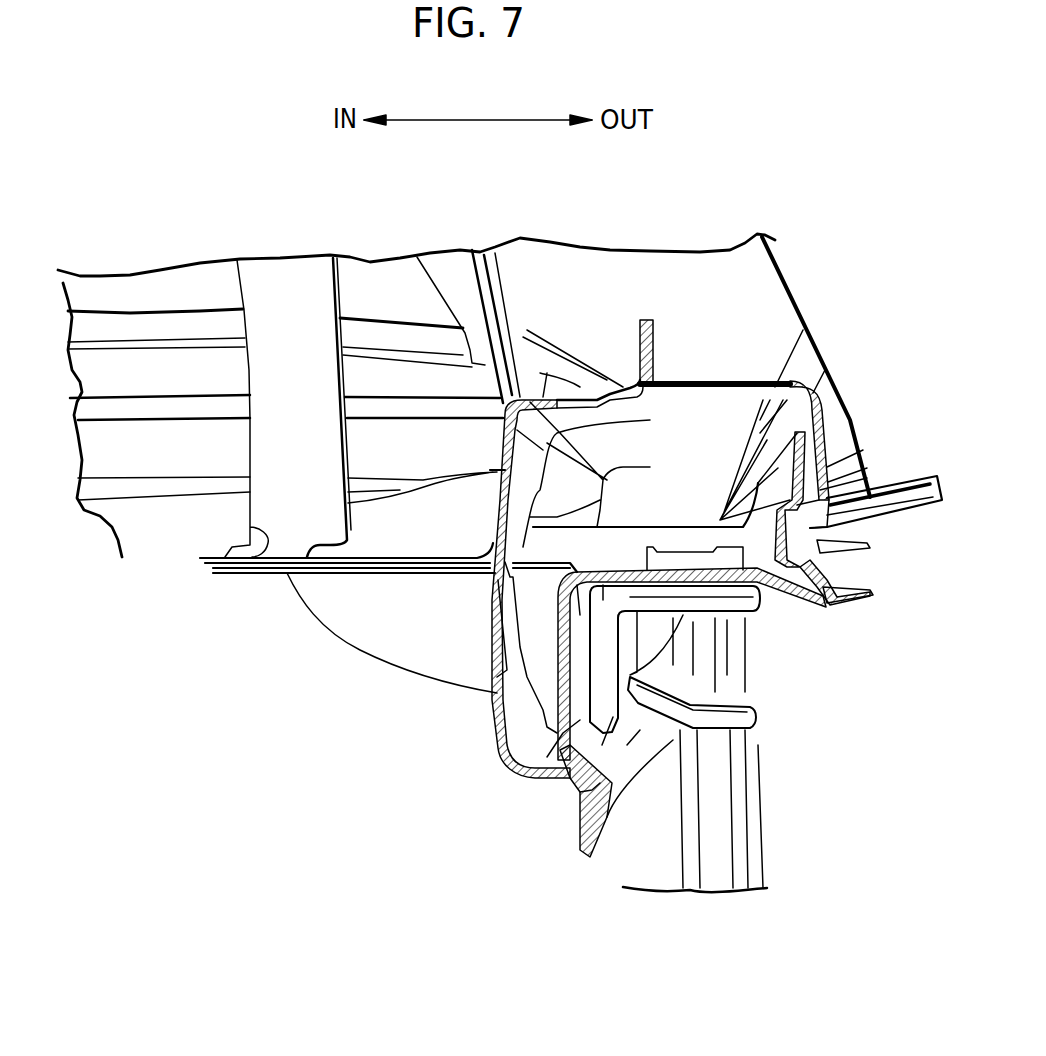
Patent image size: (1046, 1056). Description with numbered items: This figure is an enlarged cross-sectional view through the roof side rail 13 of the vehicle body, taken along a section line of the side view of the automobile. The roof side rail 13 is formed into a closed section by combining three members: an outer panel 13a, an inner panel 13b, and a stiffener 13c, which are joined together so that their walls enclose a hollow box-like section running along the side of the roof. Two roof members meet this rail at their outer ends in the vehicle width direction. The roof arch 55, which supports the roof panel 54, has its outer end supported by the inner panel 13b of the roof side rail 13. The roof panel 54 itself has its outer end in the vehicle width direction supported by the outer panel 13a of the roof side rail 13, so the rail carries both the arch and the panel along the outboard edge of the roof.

The roof side rail 13 is at (690, 362).
The outer panel 13a is at (732, 383).
The inner panel 13b is at (505, 635).
The stiffener 13c is at (783, 603).
The roof panel 54 is at (777, 397).
The roof arch 55 is at (509, 316).